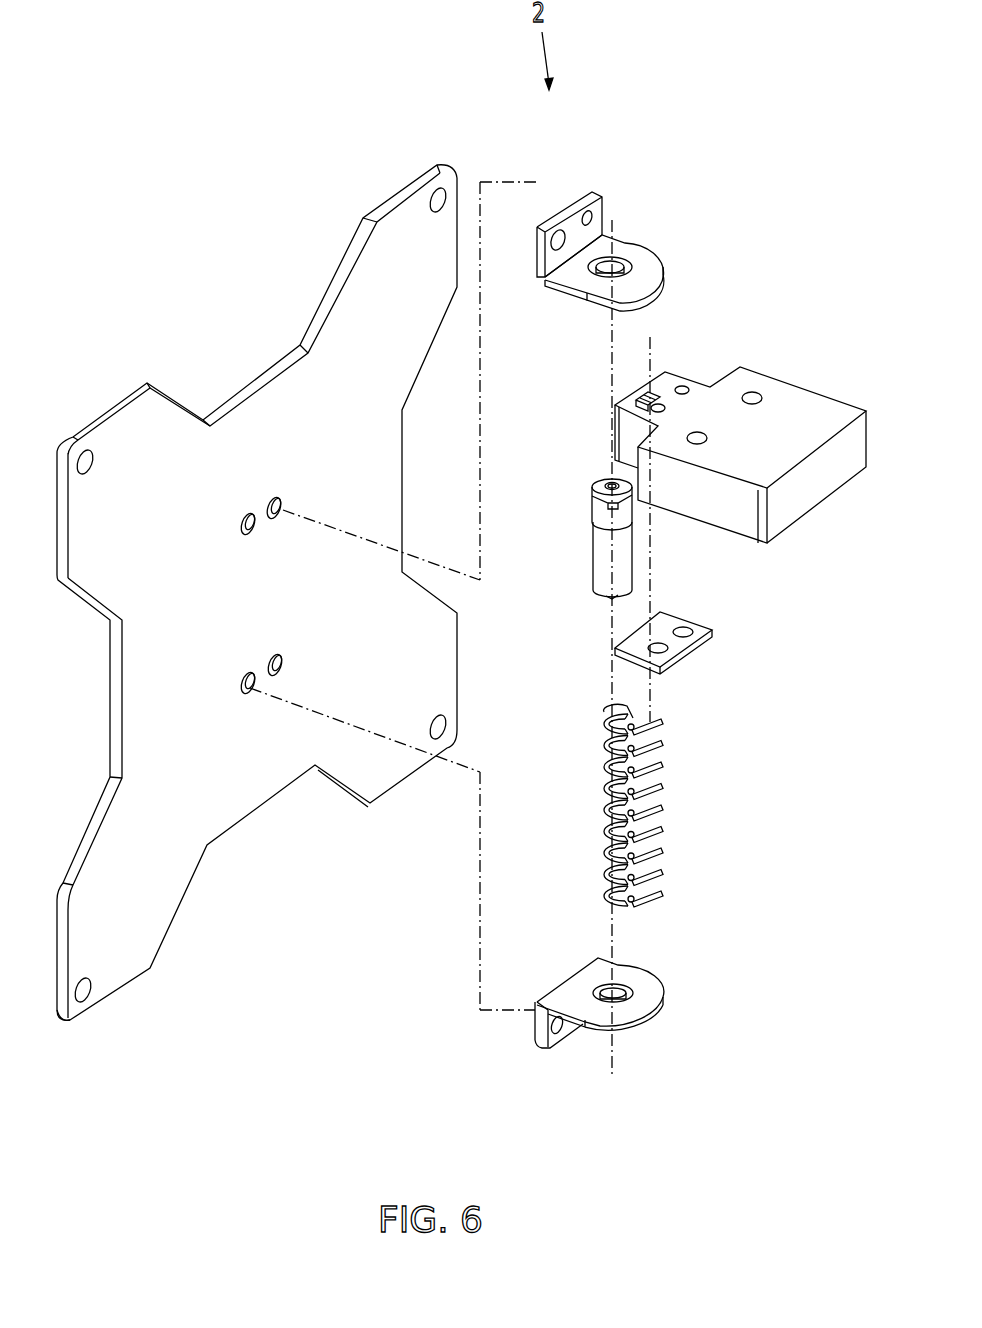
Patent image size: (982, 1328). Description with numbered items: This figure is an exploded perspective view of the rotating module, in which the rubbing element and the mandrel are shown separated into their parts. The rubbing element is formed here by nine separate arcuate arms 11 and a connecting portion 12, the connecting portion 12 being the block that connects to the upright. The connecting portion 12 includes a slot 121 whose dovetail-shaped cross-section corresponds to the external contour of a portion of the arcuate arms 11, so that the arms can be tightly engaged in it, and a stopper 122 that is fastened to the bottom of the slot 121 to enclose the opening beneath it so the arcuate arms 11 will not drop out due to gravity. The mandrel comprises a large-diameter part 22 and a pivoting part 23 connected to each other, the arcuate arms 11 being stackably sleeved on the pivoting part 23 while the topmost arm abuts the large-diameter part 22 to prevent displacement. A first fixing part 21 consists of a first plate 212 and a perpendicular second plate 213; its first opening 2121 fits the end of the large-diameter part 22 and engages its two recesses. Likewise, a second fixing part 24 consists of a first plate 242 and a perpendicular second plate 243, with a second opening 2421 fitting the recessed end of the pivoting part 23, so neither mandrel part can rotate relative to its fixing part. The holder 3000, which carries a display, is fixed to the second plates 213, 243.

The holder 3000 is at (257, 408).
The first fixing part 21 is at (635, 220).
The second plate 213 is at (585, 193).
The first plate 212 is at (647, 275).
The first opening 2121 is at (617, 258).
The connecting portion 12 is at (703, 418).
The slot 121 is at (645, 383).
The large-diameter part 22 is at (598, 515).
The pivoting part 23 is at (600, 575).
The stopper 122 is at (680, 648).
The arcuate arm 11 is at (650, 853).
The second fixing part 24 is at (632, 1030).
The first plate 242 is at (637, 1010).
The second opening 2421 is at (625, 990).
The second plate 243 is at (550, 1048).